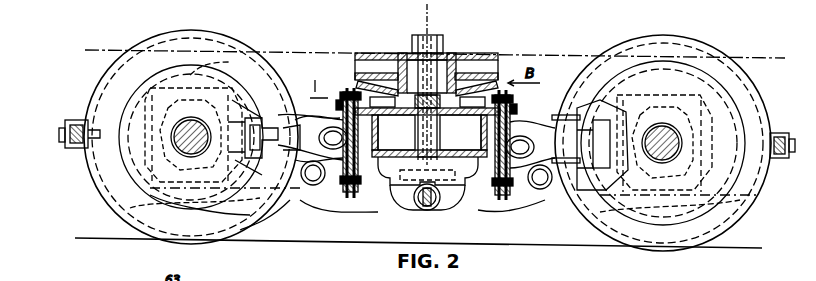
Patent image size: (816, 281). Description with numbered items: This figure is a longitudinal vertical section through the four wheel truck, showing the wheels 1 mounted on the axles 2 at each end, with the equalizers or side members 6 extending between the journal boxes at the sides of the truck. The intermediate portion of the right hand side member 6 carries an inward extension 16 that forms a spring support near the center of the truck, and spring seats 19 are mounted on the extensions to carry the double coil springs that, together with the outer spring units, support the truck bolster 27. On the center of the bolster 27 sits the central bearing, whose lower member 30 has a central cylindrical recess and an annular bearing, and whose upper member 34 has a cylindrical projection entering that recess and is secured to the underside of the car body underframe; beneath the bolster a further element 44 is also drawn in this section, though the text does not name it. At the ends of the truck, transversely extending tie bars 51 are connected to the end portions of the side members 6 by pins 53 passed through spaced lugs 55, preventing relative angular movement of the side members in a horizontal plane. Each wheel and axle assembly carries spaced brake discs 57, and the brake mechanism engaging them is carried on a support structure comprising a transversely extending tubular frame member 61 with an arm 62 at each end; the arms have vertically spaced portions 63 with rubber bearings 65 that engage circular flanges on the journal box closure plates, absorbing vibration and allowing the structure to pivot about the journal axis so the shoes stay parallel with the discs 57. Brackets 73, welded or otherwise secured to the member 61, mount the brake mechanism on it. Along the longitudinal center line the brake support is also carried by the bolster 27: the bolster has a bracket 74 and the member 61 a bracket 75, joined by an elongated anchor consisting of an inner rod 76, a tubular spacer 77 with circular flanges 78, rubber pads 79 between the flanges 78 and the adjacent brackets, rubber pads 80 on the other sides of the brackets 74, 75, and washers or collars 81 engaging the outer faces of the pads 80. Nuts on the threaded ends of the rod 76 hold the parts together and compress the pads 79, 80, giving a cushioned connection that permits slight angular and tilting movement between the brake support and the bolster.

The wheels 1 is at (92, 84).
The axles 2 is at (186, 133).
The side members 6 is at (492, 216).
The inward extension 16 is at (400, 200).
The spring seats 19 is at (350, 215).
The truck bolster 27 is at (443, 100).
The lower member 30 is at (392, 152).
The upper member 34 is at (360, 60).
The cross member 44 is at (426, 205).
The tie bars 51 is at (78, 150).
The pins 53 is at (60, 136).
The lugs 55 is at (68, 125).
The brake discs 57 is at (738, 100).
The tubular frame member 61 is at (265, 219).
The arm 62 is at (200, 215).
The vertically spaced portion 63 is at (195, 65).
The rubber bearings 65 is at (170, 88).
The brackets 73 is at (253, 137).
The bracket 74 is at (565, 125).
The bracket 75 is at (320, 184).
The inner rod 76 is at (533, 142).
The tubular spacer 77 is at (490, 186).
The circular flanges 78 is at (478, 143).
The rubber pads 79 is at (325, 122).
The rubber pads 80 is at (343, 100).
The washers or collars 81 is at (513, 110).